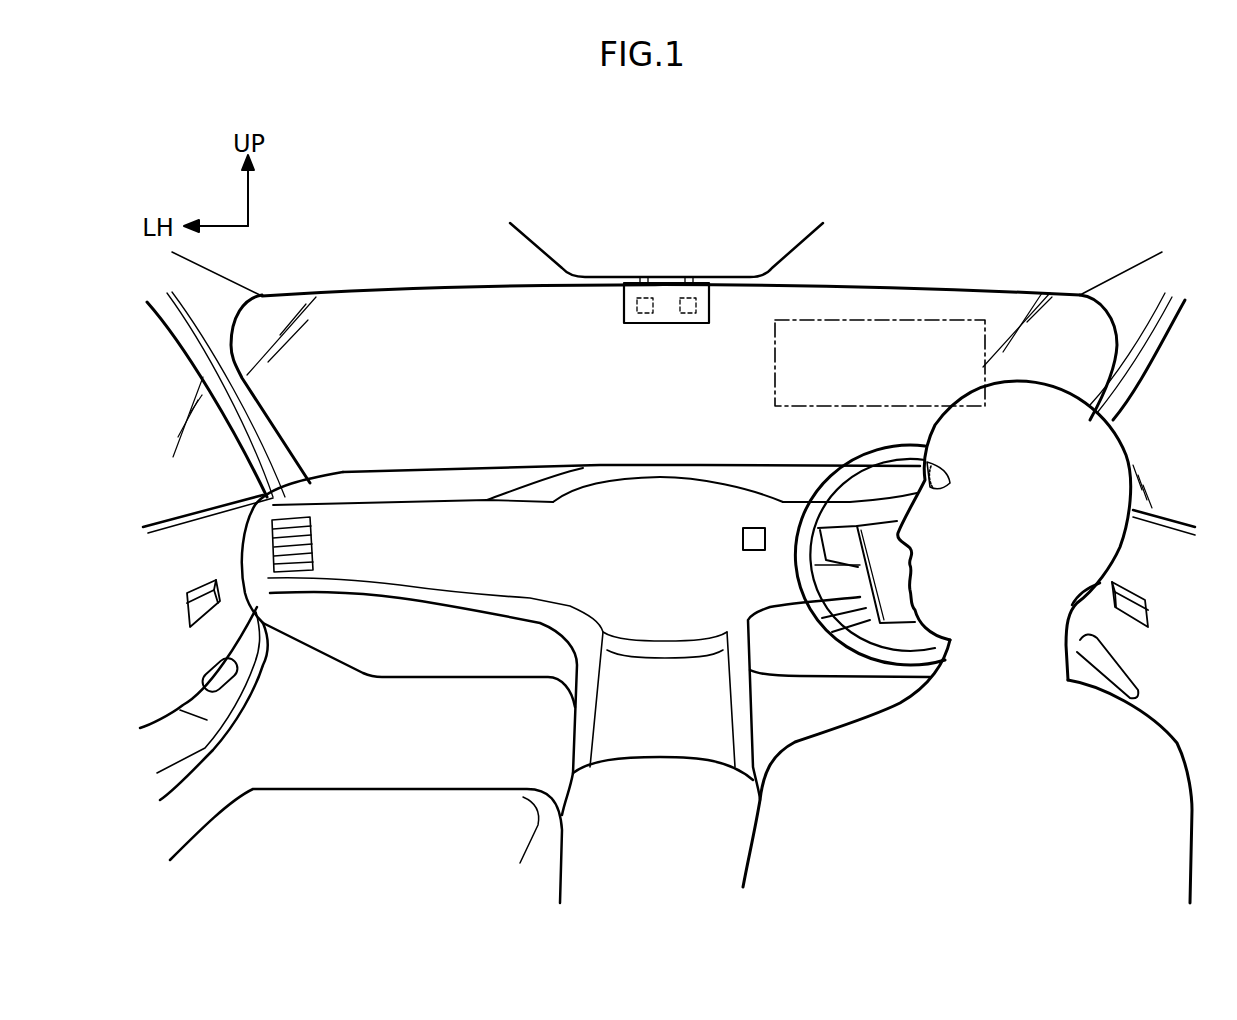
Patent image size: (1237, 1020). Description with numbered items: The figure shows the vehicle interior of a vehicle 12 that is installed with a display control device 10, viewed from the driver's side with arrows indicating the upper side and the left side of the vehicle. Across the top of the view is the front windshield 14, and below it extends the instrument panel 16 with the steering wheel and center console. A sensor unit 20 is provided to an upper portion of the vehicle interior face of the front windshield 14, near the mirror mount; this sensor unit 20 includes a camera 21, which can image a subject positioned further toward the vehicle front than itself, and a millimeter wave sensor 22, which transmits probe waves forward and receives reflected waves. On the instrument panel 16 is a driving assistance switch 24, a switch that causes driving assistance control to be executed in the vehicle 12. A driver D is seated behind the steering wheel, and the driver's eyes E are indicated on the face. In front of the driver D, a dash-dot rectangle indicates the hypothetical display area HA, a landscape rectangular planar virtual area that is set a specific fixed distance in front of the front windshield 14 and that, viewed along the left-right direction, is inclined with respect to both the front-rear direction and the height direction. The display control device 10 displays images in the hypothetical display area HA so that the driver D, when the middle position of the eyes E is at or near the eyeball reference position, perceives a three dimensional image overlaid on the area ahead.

The display control device 10 is at (672, 397).
The vehicle 12 is at (925, 250).
The front windshield 14 is at (418, 296).
The instrument panel 16 is at (426, 512).
The sensor unit 20 is at (617, 295).
The camera 21 is at (643, 292).
The millimeter wave sensor 22 is at (688, 292).
The driving assistance switch 24 is at (751, 527).
The hypothetical display area HA is at (977, 320).
The eyes E is at (948, 476).
The driver D is at (967, 642).